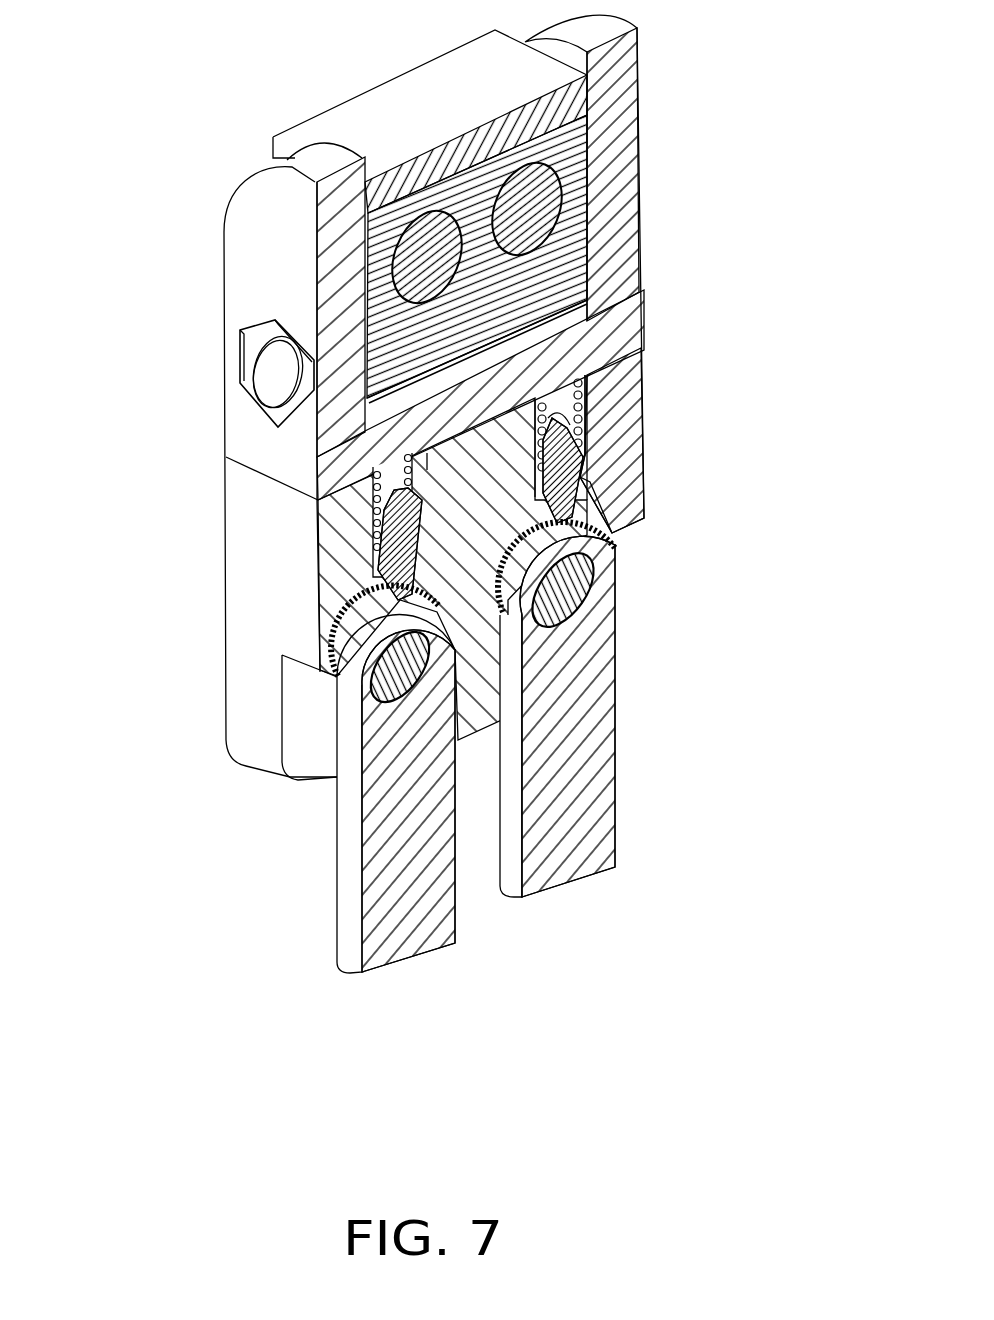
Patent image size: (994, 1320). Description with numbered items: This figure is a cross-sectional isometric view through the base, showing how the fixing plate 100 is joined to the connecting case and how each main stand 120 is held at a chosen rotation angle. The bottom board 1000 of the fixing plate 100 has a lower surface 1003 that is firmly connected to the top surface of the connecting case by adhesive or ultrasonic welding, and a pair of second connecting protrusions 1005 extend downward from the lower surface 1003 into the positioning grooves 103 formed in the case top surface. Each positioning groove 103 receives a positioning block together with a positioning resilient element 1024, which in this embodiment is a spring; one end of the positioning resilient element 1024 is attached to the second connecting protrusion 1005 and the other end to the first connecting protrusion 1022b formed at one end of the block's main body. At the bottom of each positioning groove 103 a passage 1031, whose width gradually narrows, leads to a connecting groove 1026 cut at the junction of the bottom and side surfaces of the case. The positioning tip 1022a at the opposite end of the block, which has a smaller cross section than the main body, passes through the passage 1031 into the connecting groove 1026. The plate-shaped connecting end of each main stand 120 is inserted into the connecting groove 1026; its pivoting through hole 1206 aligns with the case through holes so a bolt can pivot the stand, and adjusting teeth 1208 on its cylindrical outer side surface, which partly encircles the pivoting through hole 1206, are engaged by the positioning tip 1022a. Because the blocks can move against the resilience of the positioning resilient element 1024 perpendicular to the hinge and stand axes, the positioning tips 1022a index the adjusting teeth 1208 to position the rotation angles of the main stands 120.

The fixing plate 100 is at (255, 238).
The bottom board 1000 is at (392, 454).
The adjusting teeth 1208 is at (253, 531).
The pivoting through hole 1206 is at (337, 690).
The connecting groove 1026 is at (316, 748).
The main stand 120 is at (606, 778).
The lower surface 1003 is at (617, 352).
The positioning resilient element 1024 is at (580, 393).
The positioning groove 103 is at (582, 413).
The second connecting protrusion 1005 is at (578, 428).
The first connecting protrusion 1022b is at (583, 450).
The passage 1031 is at (587, 487).
The positioning tip 1022a is at (612, 563).